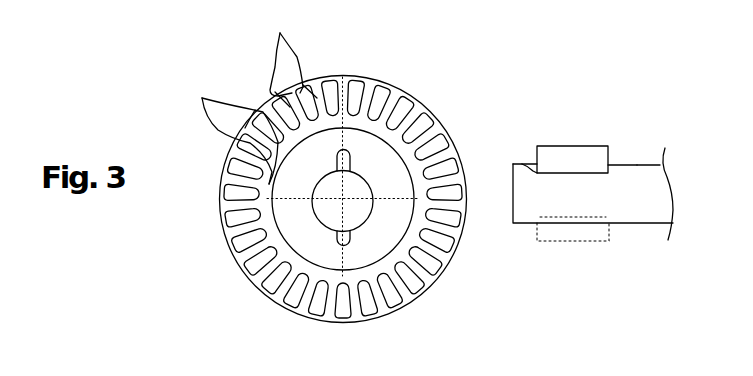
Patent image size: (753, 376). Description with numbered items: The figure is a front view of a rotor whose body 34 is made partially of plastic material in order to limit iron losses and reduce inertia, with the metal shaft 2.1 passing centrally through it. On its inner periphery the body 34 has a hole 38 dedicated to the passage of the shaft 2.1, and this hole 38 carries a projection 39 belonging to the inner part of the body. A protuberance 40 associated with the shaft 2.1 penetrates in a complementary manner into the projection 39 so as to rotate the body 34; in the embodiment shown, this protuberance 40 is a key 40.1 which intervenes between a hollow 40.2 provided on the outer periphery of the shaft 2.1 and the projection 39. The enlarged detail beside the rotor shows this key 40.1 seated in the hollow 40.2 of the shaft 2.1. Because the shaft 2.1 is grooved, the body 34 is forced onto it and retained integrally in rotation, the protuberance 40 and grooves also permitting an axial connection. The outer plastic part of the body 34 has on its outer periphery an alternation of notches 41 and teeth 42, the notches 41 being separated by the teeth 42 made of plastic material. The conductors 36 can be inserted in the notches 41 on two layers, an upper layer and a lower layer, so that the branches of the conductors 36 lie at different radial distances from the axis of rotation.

The body 34 is at (448, 84).
The conductors 36 is at (365, 93).
The hole 38 is at (325, 213).
The projection 39 is at (338, 154).
The protuberance 40 is at (561, 133).
The key 40.1 is at (589, 152).
The hollow 40.2 is at (519, 163).
The notches 41 is at (190, 170).
The teeth 42 is at (227, 131).
The shaft 2.1 is at (634, 183).